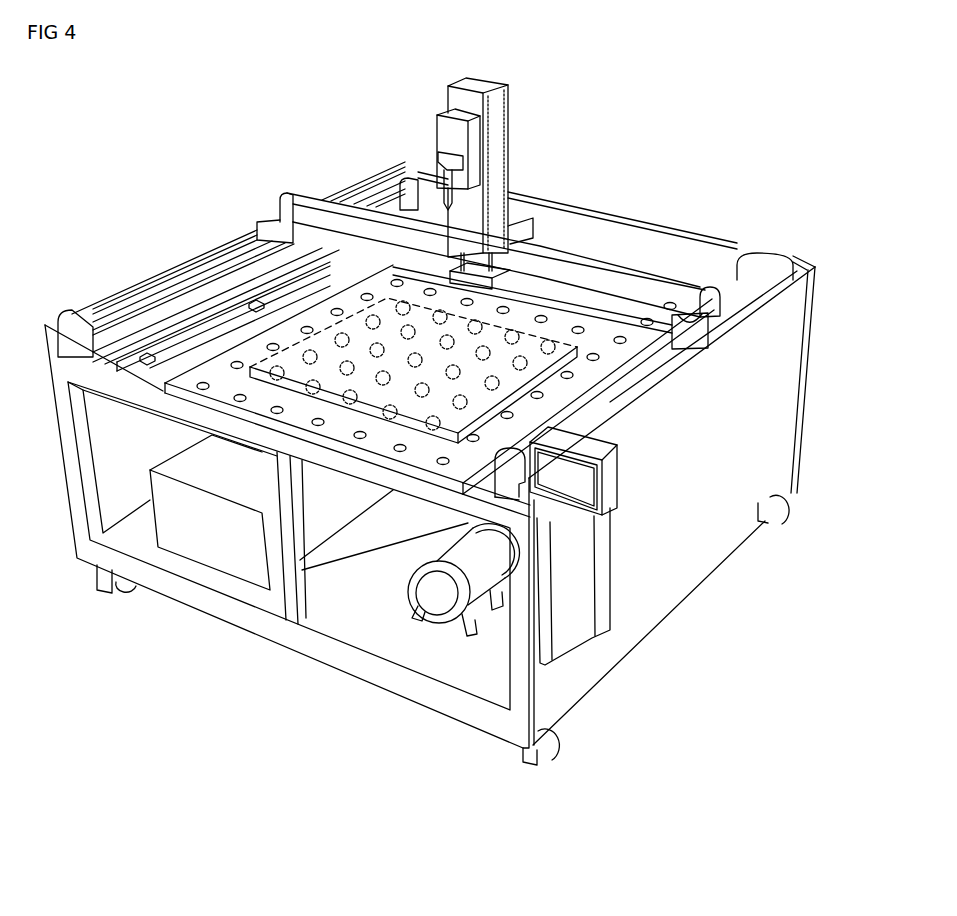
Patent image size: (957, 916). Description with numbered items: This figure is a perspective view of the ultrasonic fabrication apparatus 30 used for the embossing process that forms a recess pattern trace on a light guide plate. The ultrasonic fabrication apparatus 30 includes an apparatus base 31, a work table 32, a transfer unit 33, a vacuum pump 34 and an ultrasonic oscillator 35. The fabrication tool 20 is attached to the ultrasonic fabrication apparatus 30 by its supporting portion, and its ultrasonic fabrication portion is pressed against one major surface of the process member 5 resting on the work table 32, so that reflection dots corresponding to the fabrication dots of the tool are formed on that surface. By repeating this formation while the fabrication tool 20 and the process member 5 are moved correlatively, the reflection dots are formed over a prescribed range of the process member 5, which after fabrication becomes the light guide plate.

The ultrasonic fabrication apparatus 30 is at (643, 136).
The apparatus base 31 is at (687, 497).
The work table 32 is at (605, 325).
The transfer unit 33 is at (213, 263).
The vacuum pump 34 is at (433, 595).
The ultrasonic oscillator 35 is at (203, 530).
The fabrication tool 20 is at (437, 177).
The process member 5 is at (513, 353).